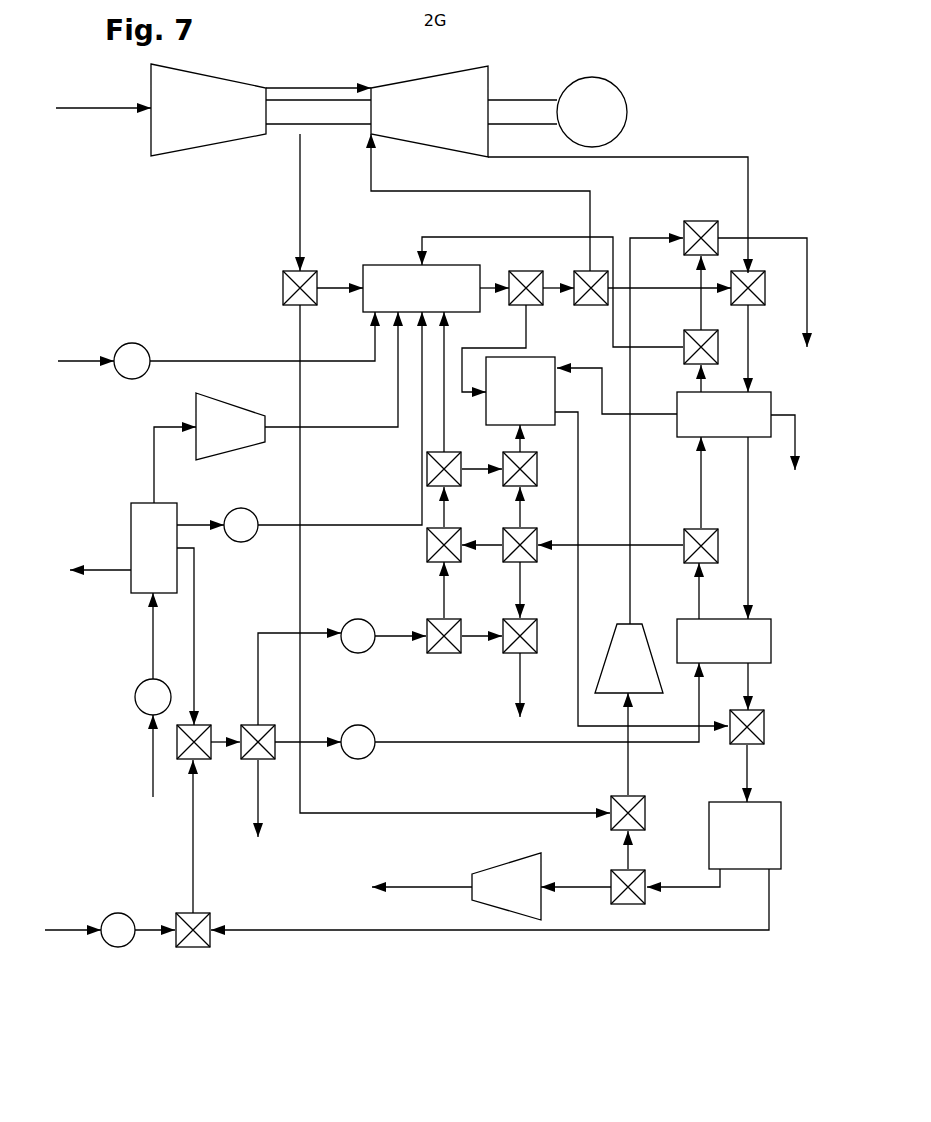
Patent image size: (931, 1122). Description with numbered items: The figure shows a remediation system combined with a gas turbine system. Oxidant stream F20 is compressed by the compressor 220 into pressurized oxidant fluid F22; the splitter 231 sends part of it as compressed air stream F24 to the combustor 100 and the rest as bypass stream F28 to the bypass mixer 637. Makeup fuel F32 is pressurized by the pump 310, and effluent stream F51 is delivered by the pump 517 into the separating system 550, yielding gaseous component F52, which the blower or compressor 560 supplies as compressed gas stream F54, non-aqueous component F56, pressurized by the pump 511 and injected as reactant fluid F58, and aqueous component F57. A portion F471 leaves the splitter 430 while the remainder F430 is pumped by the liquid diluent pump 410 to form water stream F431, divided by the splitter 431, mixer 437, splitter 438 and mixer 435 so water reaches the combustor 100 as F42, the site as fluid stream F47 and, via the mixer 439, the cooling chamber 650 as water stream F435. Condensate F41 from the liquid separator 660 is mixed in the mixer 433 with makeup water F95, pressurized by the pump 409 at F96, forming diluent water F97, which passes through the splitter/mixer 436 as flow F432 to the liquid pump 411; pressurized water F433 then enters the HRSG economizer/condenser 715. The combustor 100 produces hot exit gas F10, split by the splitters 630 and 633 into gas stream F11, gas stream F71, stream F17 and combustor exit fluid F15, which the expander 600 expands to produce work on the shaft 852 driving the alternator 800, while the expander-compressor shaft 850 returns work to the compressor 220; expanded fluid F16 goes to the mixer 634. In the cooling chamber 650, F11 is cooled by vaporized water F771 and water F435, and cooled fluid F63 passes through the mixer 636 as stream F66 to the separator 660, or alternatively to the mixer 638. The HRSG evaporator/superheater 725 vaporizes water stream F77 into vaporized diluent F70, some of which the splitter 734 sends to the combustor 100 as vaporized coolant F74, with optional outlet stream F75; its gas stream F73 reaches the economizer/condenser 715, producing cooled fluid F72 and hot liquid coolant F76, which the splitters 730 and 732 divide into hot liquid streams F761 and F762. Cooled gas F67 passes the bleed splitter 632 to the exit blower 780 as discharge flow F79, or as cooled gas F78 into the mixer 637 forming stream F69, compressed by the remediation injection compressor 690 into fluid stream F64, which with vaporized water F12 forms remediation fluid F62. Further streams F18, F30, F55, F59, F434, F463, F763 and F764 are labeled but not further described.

The compressor 220 is at (208, 110).
The expander 600 is at (429, 111).
The expander-compressor shaft 850 is at (318, 106).
The shaft 852 is at (522, 112).
The alternator 800 is at (592, 112).
The combustor 100 is at (421, 288).
The splitter 231 is at (285, 273).
The splitter 630 is at (537, 306).
The splitter 633 is at (591, 307).
The mixer 634 is at (765, 288).
The mixer 638 is at (684, 221).
The splitter 734 is at (720, 341).
The HRSG evaporator/superheater 725 is at (724, 414).
The cooling chamber 650 is at (520, 391).
The splitter 438 is at (427, 471).
The mixer 439 is at (538, 494).
The mixer 437 is at (440, 544).
The splitter 732 is at (540, 530).
The splitter 431 is at (430, 619).
The mixer 435 is at (532, 620).
The liquid diluent pump 410 is at (354, 621).
The liquid pump 411 is at (354, 726).
The splitter 430 is at (270, 725).
The splitter/mixer 436 is at (212, 758).
The mixer 433 is at (208, 913).
The pump 409 is at (128, 947).
The liquid separator 660 is at (745, 835).
The bleed splitter 632 is at (618, 903).
The bypass mixer 637 is at (612, 795).
The exit blower 780 is at (541, 886).
The remediation injection compressor 690 is at (629, 658).
The HRSG economizer/condenser 715 is at (724, 641).
The splitter 730 is at (683, 528).
The mixer 636 is at (765, 726).
The separating system 550 is at (154, 548).
The blower or compressor 560 is at (230, 426).
The pump 310 is at (134, 345).
The pump 511 is at (240, 505).
The pump 517 is at (138, 697).
The oxidant stream F20 is at (96, 106).
The pressurized oxidant fluid F22 is at (298, 195).
The compressed air stream F24 is at (334, 277).
The hot exit gas stream F10 is at (495, 279).
The hot product fluid stream F17 is at (559, 279).
The gas flow F18 is at (667, 293).
The expanded fluid F16 is at (706, 156).
The vaporized water F12 is at (695, 278).
The remediation fluid F62 is at (790, 238).
The gas stream F71 is at (752, 341).
The vaporized diluent stream F70 is at (696, 380).
The vaporized coolant stream F74 is at (487, 237).
The combustor exit fluid stream F15 is at (430, 191).
The outlet stream F75 is at (796, 408).
The vaporized water stream F771 is at (613, 414).
The gas stream F11 is at (526, 336).
The combustor water stream F42 is at (444, 351).
The cooled fluid stream F63 is at (578, 485).
The compressed fluid stream F64 is at (630, 592).
The water stream F435 is at (515, 447).
The flow F763 is at (479, 538).
The hot liquid stream F761 is at (604, 542).
The hot liquid stream F762 is at (514, 508).
The flow F434 is at (437, 504).
The flow F764 is at (517, 590).
The water stream F431 is at (407, 640).
The site injection fluid stream F47 is at (518, 682).
The aqueous stream F430 is at (257, 665).
The pressurized water F433 is at (484, 739).
The water stream F432 is at (304, 747).
The bypass stream F28 is at (442, 813).
The flow F463 is at (225, 738).
The aqueous liquid stream portion F471 is at (264, 816).
The pressurized diluent water F97 is at (190, 840).
The makeup water F95 is at (68, 926).
The pump F96 is at (156, 928).
The condensate stream F41 is at (313, 926).
The cooled gas stream F67 is at (668, 885).
The cooled gas stream F78 is at (622, 853).
The mixed gas stream F69 is at (630, 761).
The discharge flow F79 is at (414, 885).
The gas stream F73 is at (749, 528).
The hot liquid coolant F76 is at (698, 602).
The hot liquid stream F77 is at (700, 493).
The cooled fluid stream F72 is at (751, 689).
The cooled fluid stream F66 is at (752, 778).
The gaseous component F52 is at (146, 484).
The flow F55 is at (355, 425).
The air flow F30 is at (86, 359).
The makeup fuel F32 is at (240, 359).
The non-aqueous component F56 is at (206, 523).
The reactant fluid F58 is at (355, 524).
The flow F59 is at (114, 568).
The aqueous component F57 is at (196, 609).
The compressed gas stream F54 is at (162, 641).
The effluent stream F51 is at (135, 754).